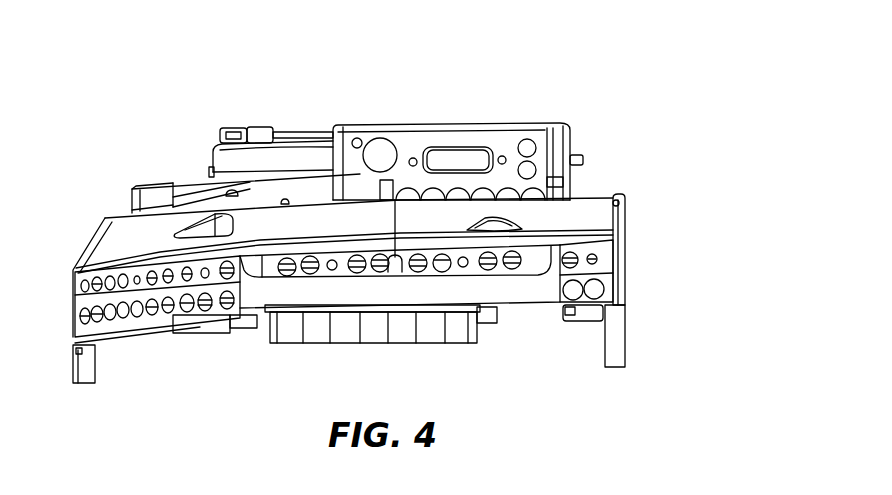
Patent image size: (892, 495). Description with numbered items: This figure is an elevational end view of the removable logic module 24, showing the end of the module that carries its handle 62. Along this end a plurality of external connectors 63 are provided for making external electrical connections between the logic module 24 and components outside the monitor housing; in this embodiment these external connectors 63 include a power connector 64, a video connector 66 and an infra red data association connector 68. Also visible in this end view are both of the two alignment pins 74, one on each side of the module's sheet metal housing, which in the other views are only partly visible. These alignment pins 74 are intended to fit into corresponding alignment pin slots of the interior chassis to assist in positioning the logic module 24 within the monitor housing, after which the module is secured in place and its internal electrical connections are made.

The logic module 24 is at (597, 130).
The handle 62 is at (527, 290).
The external connectors 63 is at (437, 73).
The power connector 64 is at (383, 190).
The video connector 66 is at (463, 158).
The infra red data association (IrDA) connector 68 is at (381, 148).
The alignment pins 74 is at (207, 172).